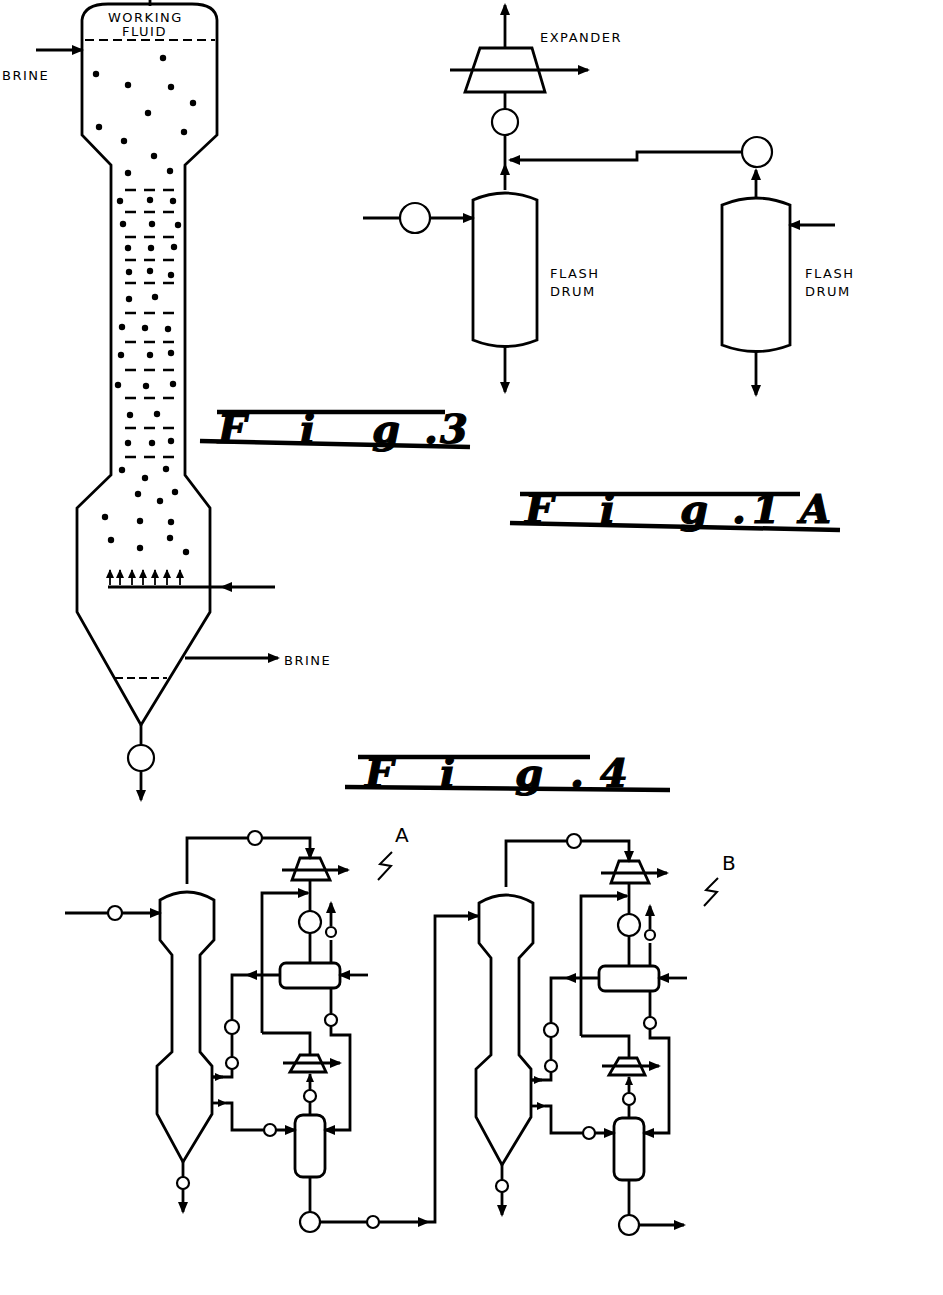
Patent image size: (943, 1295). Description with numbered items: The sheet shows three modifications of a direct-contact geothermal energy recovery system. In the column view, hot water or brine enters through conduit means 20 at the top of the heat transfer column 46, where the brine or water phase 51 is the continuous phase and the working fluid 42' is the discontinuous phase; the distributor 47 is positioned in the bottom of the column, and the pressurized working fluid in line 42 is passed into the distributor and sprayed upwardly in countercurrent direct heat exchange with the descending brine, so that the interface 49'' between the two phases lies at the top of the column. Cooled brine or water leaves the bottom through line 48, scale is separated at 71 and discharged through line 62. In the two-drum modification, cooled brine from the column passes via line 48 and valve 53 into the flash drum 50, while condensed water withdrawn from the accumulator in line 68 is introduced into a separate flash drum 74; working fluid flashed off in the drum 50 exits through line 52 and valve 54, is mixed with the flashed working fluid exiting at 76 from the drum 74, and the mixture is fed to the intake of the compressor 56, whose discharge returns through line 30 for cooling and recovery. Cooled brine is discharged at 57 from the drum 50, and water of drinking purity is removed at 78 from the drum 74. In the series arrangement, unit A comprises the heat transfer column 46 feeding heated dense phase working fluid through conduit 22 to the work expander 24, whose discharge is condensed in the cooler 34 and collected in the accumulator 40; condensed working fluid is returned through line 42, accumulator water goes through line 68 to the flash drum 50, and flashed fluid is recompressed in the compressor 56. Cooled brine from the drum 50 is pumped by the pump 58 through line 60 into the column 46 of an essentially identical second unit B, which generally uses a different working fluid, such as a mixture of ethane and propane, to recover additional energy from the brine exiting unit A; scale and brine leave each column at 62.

In FIG. 3, the conduit means 20 is at (45, 55).
In FIG. 4, the conduit means 20 is at (82, 914).
In FIG. 4, the conduit 22 is at (222, 841).
In FIG. 4, the work expander 24 is at (320, 866).
In FIG. 1A, the line 30 is at (505, 30).
In FIG. 4, the cooler 34 is at (322, 915).
In FIG. 4, the accumulator 40 is at (342, 975).
In FIG. 3, the line 42 is at (248, 564).
In FIG. 4, the line 42 is at (405, 1040).
In FIG. 3, the working fluid 42' is at (72, 493).
In FIG. 3, the heat transfer column 46 is at (188, 324).
In FIG. 4, the heat transfer column 46 is at (172, 1020).
In FIG. 3, the distributor 47 is at (100, 571).
In FIG. 3, the line 48 is at (226, 658).
In FIG. 1A, the line 48 is at (374, 232).
In FIG. 4, the line 48 is at (249, 1132).
In FIG. 3, the interface 49'' is at (235, 50).
In FIG. 1A, the flash drum 50 is at (514, 293).
In FIG. 4, the flash drum 50 is at (330, 1168).
In FIG. 3, the brine or water phase 51 is at (172, 258).
In FIG. 1A, the line 52 is at (500, 186).
In FIG. 1A, the valve 53 is at (420, 235).
In FIG. 1A, the valve 54 is at (519, 122).
In FIG. 1A, the compressor 56 is at (472, 90).
In FIG. 4, the compressor 56 is at (300, 1062).
In FIG. 1A, the brine discharge 57 is at (508, 365).
In FIG. 4, the pump 58 is at (312, 1233).
In FIG. 4, the line 60 is at (440, 914).
In FIG. 3, the line 62 is at (138, 794).
In FIG. 4, the line 62 is at (180, 1198).
In FIG. 1A, the line 68 is at (820, 228).
In FIG. 4, the line 68 is at (352, 1080).
In FIG. 3, the scale separation region 71 is at (134, 698).
In FIG. 1A, the flash drum 74 is at (765, 293).
In FIG. 1A, the flashed working fluid outlet 76 is at (773, 190).
In FIG. 1A, the water outlet 78 is at (757, 372).